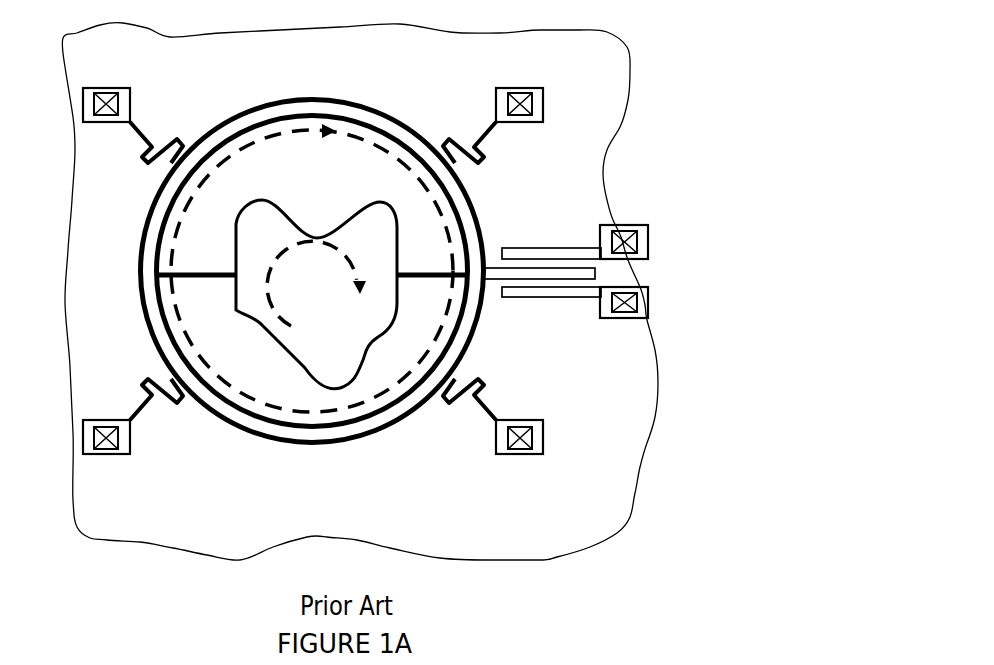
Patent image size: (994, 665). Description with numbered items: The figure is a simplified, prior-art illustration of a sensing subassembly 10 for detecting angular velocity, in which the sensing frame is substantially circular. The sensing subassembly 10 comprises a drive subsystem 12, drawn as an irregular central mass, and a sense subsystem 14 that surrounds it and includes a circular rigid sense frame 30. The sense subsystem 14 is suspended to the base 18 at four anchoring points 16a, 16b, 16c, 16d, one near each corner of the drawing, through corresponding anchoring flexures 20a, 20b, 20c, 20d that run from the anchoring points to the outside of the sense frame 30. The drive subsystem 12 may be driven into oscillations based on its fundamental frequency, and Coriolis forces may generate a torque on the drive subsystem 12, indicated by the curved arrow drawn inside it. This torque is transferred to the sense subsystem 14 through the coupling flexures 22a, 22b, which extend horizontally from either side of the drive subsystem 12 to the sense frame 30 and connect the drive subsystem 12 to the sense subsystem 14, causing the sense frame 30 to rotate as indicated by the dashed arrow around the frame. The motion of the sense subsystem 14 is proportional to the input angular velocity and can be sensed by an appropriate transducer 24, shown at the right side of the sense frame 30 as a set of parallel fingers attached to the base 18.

The sensing subassembly 10 is at (338, 343).
The drive subsystem 12 is at (310, 367).
The sense subsystem 14 is at (350, 443).
The anchoring point 16a is at (102, 123).
The anchoring point 16b is at (543, 108).
The anchoring point 16c is at (100, 421).
The anchoring point 16d is at (543, 430).
The base 18 is at (592, 58).
The anchoring flexure 20a is at (152, 142).
The anchoring flexure 20b is at (478, 138).
The anchoring flexure 20c is at (148, 407).
The anchoring flexure 20d is at (483, 403).
The coupling flexure 22a is at (192, 274).
The coupling flexure 22b is at (427, 276).
The transducer 24 is at (547, 283).
The rigid sense frame 30 is at (445, 178).